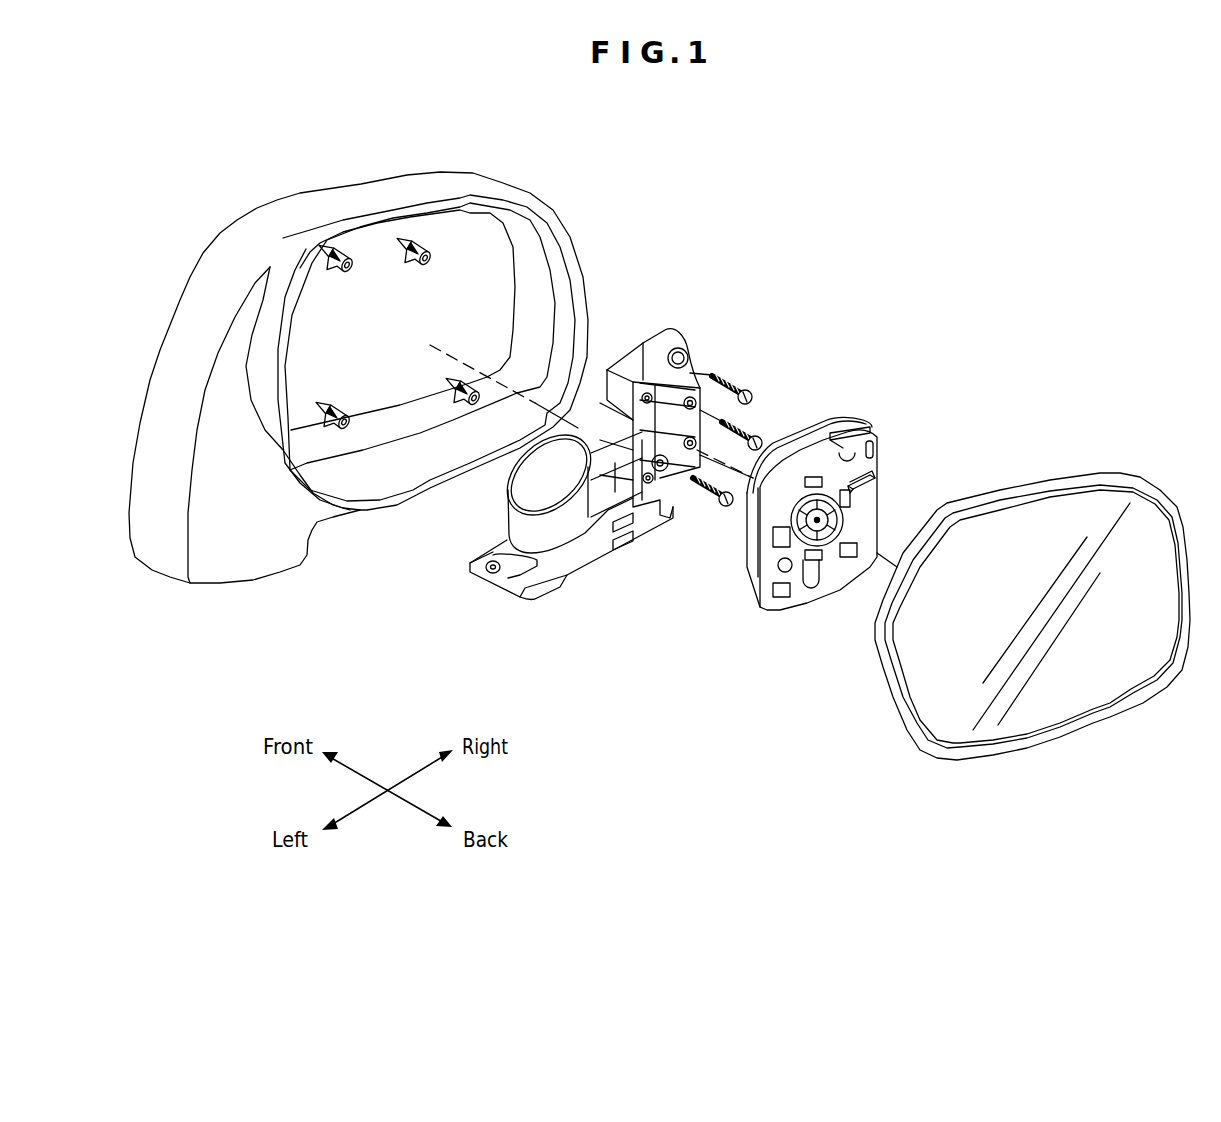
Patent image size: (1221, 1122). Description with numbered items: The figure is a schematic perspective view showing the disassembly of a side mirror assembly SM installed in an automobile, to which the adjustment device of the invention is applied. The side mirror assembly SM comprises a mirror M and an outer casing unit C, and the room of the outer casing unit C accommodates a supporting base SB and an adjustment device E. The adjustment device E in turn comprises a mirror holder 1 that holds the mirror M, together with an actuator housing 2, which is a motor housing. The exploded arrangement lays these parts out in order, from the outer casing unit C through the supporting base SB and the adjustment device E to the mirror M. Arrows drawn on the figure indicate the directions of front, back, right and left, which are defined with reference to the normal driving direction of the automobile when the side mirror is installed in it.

The mirror holder 1 is at (876, 465).
The actuator housing 2 is at (808, 428).
The outer casing unit C is at (440, 183).
The side mirror assembly SM is at (933, 278).
The supporting base SB is at (630, 370).
The adjustment device E is at (841, 483).
The mirror M is at (1048, 513).